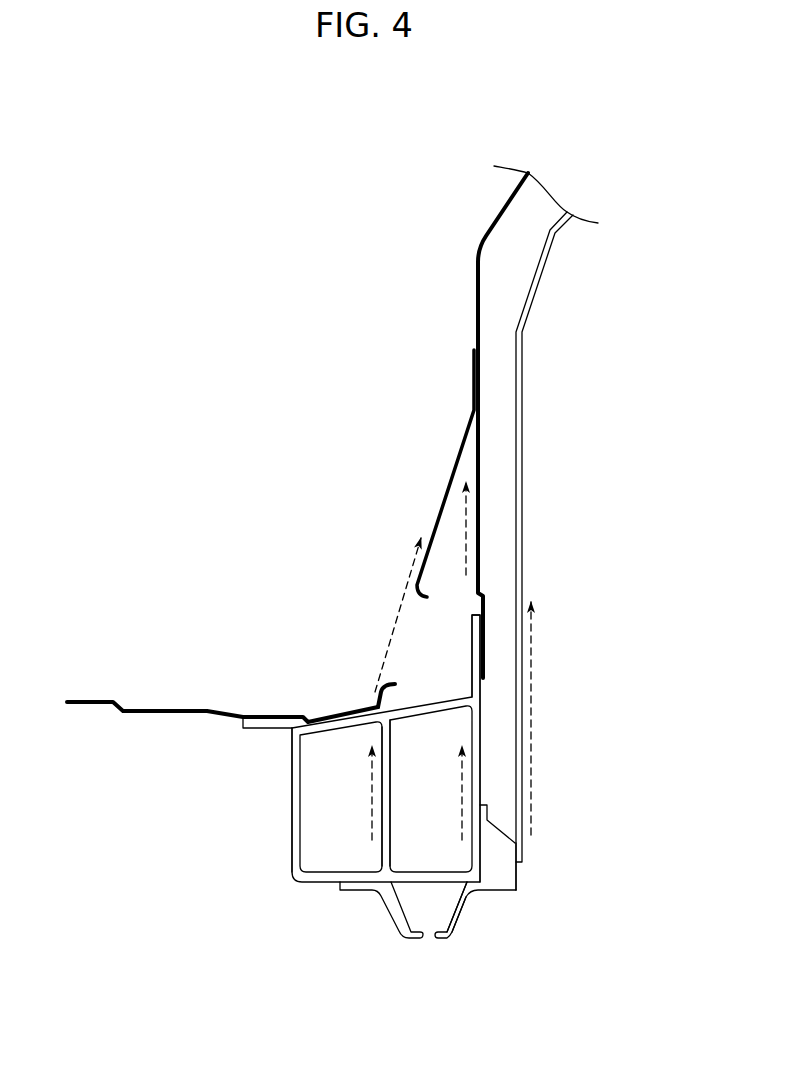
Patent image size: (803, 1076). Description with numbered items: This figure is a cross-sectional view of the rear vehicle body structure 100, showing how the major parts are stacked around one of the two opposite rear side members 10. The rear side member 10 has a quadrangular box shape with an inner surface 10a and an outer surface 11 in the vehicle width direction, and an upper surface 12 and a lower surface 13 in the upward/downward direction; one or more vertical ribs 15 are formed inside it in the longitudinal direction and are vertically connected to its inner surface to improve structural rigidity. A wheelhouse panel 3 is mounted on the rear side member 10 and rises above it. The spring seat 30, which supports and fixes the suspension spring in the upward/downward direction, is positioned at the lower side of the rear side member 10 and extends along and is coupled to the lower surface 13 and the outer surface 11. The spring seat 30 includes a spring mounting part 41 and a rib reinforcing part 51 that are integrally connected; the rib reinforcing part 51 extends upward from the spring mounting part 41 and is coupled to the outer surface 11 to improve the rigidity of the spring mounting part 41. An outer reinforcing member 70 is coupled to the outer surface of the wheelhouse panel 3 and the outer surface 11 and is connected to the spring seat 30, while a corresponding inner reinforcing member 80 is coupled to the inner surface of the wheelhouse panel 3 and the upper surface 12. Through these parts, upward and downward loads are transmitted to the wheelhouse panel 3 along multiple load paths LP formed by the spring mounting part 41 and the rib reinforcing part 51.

The rear vehicle body structure 100 is at (288, 137).
The wheelhouse panel 3 is at (478, 452).
The outer reinforcing member 70 is at (530, 512).
The inner reinforcing member 80 is at (443, 489).
The load path LP is at (466, 520).
The upper surface 12 is at (430, 697).
The rear side member 10 is at (276, 881).
The inner surface 10a is at (292, 762).
The outer surface 11 is at (480, 772).
The vertical rib 15 is at (387, 842).
The lower surface 13 is at (318, 883).
The spring mounting part 41 is at (480, 915).
The rib reinforcing part 51 is at (500, 813).
The spring seat 30 is at (597, 807).